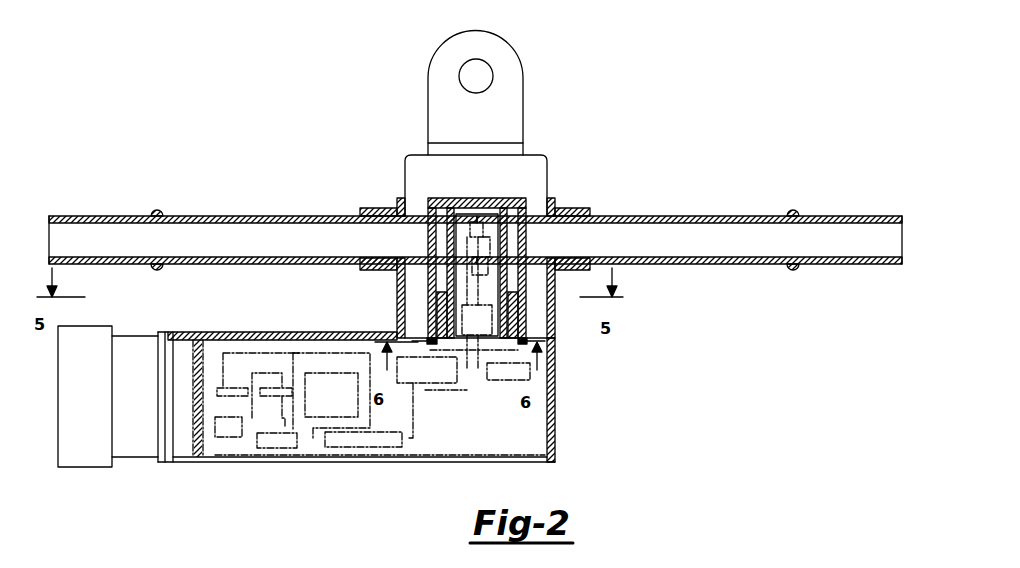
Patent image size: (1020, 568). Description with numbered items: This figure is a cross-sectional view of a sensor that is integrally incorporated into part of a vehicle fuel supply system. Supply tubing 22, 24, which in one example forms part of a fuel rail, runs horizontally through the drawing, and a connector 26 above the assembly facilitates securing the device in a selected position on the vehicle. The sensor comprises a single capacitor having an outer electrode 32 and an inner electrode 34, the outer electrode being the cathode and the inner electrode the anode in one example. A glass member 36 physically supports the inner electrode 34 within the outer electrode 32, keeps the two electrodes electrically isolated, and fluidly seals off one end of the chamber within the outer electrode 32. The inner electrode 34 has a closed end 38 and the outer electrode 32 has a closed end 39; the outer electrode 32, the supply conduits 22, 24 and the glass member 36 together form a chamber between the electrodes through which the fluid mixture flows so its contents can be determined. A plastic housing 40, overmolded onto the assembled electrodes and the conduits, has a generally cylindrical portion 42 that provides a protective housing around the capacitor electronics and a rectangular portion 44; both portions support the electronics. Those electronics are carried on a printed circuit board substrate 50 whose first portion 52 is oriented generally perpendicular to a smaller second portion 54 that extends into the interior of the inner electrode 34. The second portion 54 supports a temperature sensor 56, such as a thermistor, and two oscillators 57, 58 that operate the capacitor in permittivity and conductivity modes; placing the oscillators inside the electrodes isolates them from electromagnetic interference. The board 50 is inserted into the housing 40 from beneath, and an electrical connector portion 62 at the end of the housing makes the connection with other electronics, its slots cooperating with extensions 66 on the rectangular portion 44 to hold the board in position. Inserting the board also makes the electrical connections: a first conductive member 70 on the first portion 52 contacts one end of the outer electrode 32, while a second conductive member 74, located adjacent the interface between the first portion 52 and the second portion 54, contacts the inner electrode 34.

The supply tubing 22 is at (235, 216).
The supply tubing 24 is at (680, 216).
The connector 26 is at (500, 46).
The outer electrode 32 is at (526, 312).
The inner electrode 34 is at (504, 340).
The glass member 36 is at (440, 300).
The closed end 38 is at (470, 216).
The closed end 39 is at (432, 200).
The plastic housing 40 is at (407, 404).
The cylindrical portion 42 is at (555, 440).
The rectangular portion 44 is at (240, 332).
The printed circuit board substrate 50 is at (238, 445).
The first portion 52 is at (437, 437).
The second portion 54 is at (494, 216).
The temperature sensor 56 is at (471, 226).
The oscillator 57 is at (470, 320).
The oscillator 58 is at (485, 266).
The electrical connector portion 62 is at (90, 463).
The extensions 66 is at (195, 462).
The first conductive member 70 is at (517, 343).
The second conductive member 74 is at (468, 340).